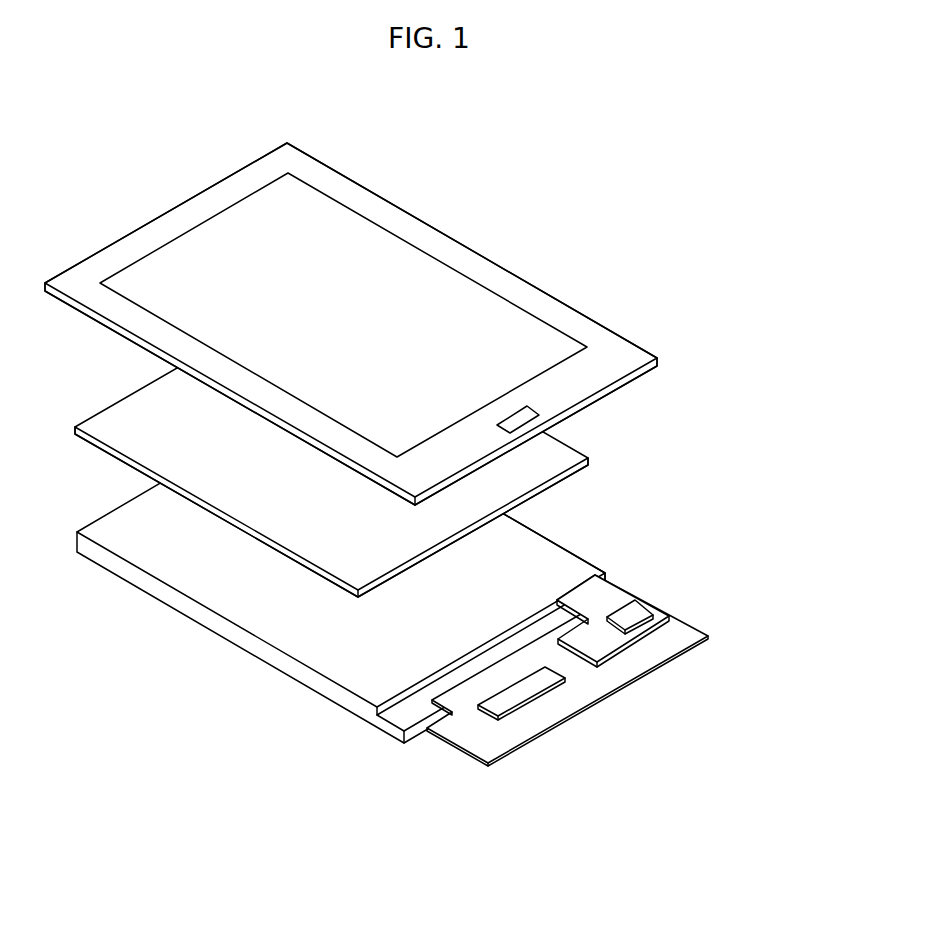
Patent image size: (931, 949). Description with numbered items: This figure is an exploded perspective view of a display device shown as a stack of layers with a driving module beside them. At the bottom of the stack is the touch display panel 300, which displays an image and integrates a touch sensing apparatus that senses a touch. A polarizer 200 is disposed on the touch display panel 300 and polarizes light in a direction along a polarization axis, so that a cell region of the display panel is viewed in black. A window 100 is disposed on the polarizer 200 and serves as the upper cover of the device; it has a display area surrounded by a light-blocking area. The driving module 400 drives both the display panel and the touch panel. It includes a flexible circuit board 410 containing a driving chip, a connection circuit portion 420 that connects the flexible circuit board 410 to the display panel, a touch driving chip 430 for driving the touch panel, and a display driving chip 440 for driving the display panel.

The window 100 is at (659, 359).
The polarizer 200 is at (590, 458).
The touch display panel 300 is at (555, 546).
The driving module 400 is at (628, 667).
The flexible circuit board 410 is at (602, 670).
The connection circuit portion 420 is at (620, 588).
The touch driving chip 430 is at (645, 613).
The display driving chip 440 is at (565, 678).